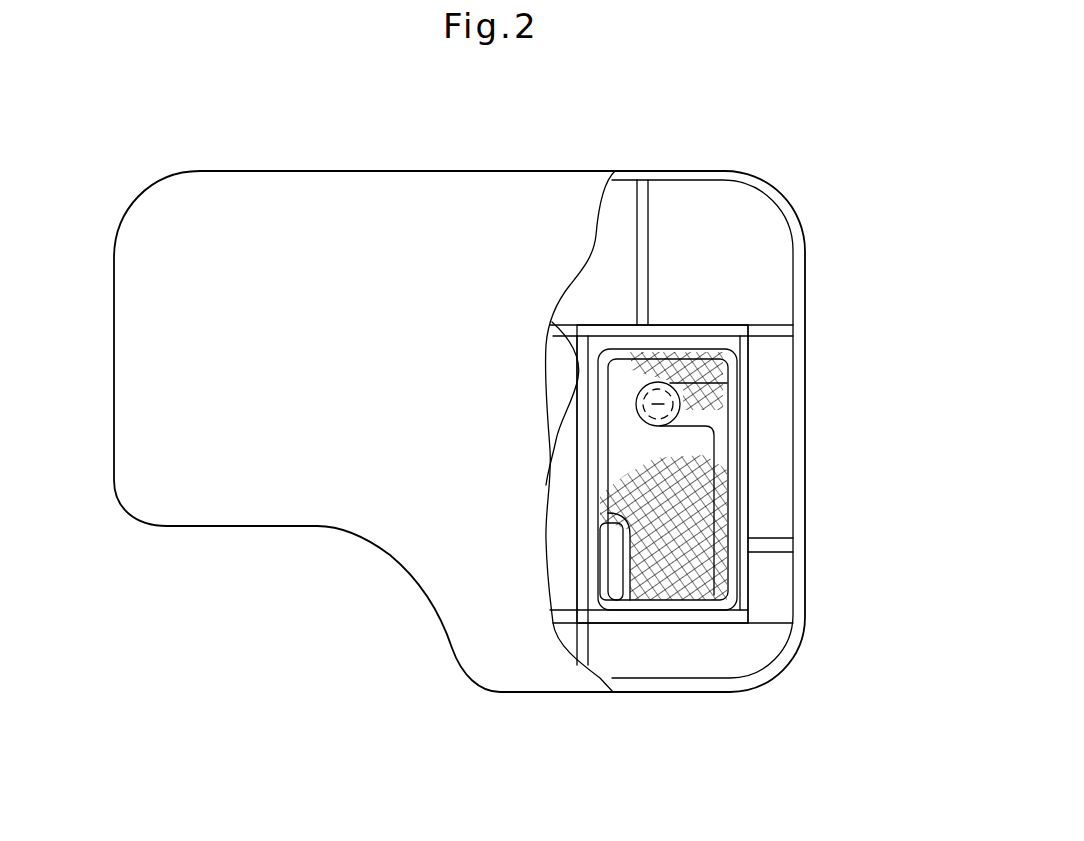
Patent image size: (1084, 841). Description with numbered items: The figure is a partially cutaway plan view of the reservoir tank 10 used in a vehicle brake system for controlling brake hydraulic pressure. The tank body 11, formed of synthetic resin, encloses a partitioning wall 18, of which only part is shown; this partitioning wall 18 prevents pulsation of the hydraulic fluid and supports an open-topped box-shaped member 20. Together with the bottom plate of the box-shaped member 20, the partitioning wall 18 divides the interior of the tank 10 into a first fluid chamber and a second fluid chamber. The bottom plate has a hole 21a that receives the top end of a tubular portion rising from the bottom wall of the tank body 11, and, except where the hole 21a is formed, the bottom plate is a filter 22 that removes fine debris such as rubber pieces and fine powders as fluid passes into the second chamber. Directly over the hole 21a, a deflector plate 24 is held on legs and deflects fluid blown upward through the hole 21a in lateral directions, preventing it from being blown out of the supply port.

The reservoir tank 10 is at (807, 242).
The tank body 11 is at (527, 197).
The partitioning wall 18 is at (722, 323).
The box-shaped member 20 is at (745, 497).
The hole 21a is at (745, 390).
The filter 22 is at (705, 578).
The deflector plate 24 is at (660, 410).